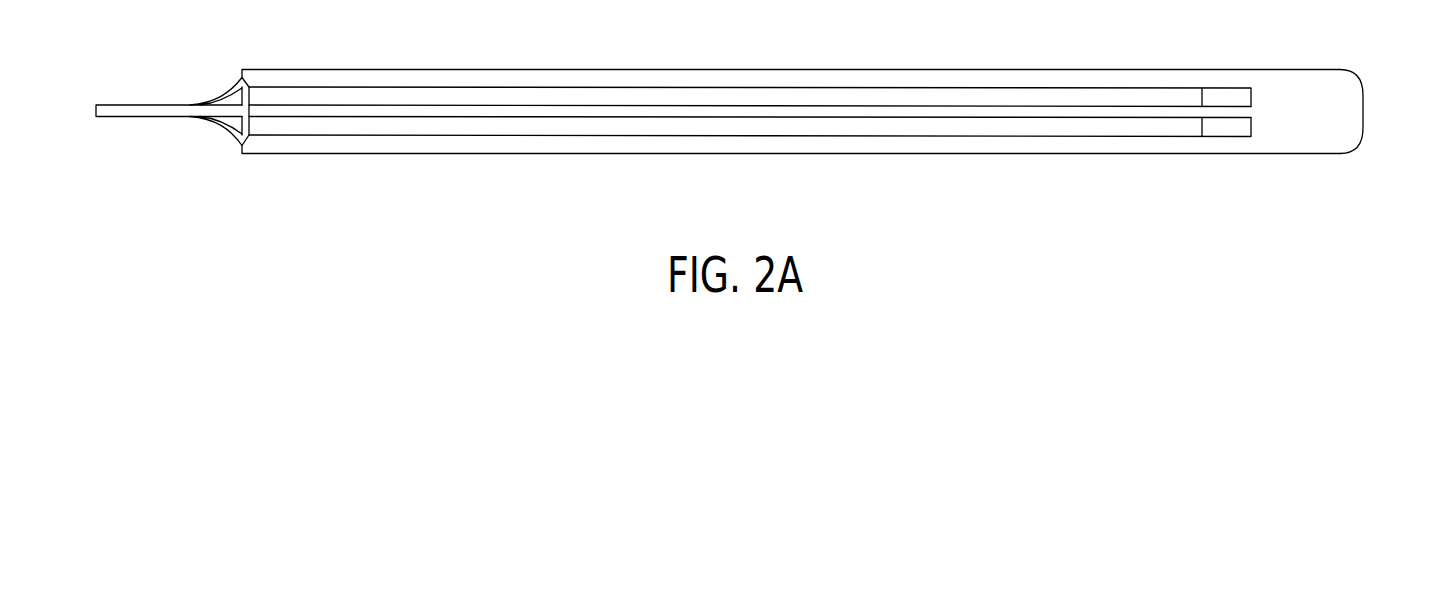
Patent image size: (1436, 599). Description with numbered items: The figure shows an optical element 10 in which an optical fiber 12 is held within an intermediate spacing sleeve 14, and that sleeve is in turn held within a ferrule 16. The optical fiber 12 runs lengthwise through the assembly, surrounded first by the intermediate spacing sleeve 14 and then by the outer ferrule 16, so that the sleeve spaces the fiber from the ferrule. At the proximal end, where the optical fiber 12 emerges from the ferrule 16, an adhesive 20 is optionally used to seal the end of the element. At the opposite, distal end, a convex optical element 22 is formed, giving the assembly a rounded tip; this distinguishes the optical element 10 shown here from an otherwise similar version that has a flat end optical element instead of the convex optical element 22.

The optical element 10 is at (759, 133).
The optical fiber 12 is at (853, 112).
The intermediate spacing sleeve 14 is at (621, 88).
The ferrule 16 is at (393, 69).
The adhesive 20 is at (219, 92).
The convex optical element 22 is at (1363, 113).